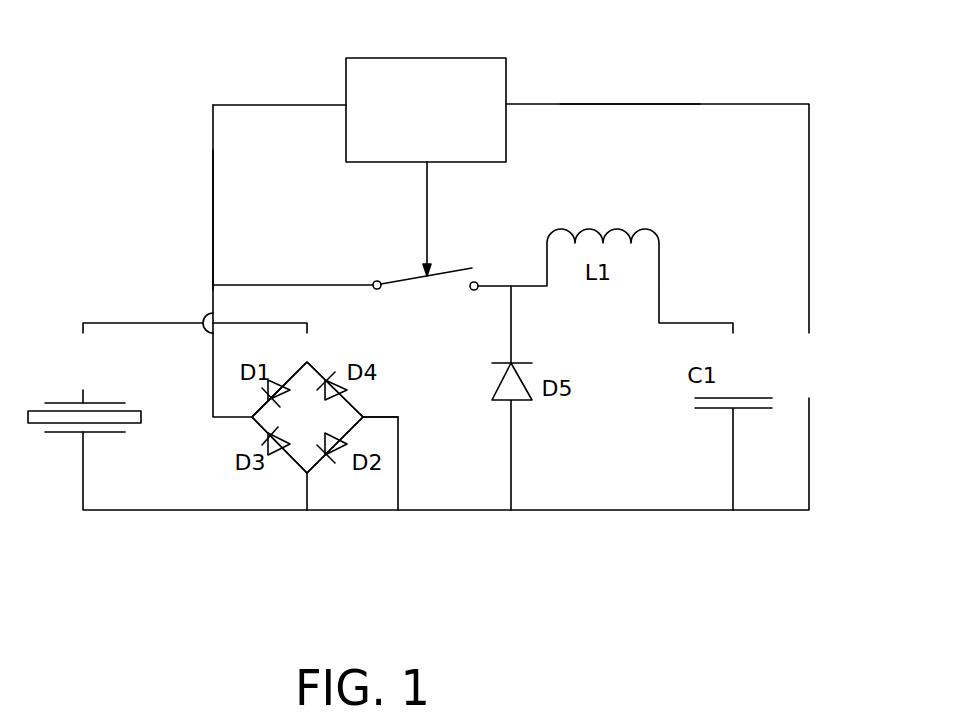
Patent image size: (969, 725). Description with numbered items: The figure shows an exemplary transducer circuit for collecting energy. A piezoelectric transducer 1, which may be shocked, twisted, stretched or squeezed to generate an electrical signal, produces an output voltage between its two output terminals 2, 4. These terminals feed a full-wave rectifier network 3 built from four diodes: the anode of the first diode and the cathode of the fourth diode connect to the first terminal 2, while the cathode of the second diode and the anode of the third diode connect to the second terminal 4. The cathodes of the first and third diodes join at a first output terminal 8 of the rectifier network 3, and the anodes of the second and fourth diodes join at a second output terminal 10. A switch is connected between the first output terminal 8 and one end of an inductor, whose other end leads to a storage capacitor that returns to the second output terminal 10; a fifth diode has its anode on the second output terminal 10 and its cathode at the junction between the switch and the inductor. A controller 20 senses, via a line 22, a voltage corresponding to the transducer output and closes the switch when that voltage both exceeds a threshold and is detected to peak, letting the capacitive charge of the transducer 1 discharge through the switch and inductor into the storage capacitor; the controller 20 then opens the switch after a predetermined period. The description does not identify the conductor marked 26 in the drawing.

The piezoelectric transducer 1 is at (141, 418).
The first output terminal 2 is at (83, 390).
The full-wave rectifier network 3 is at (330, 482).
The second output terminal 4 is at (83, 450).
The first output terminal of the rectifier network 8 is at (375, 281).
The second output terminal of the rectifier network 10 is at (380, 415).
The controller 20 is at (507, 58).
The line 22 is at (213, 218).
The return conductor 26 is at (622, 103).